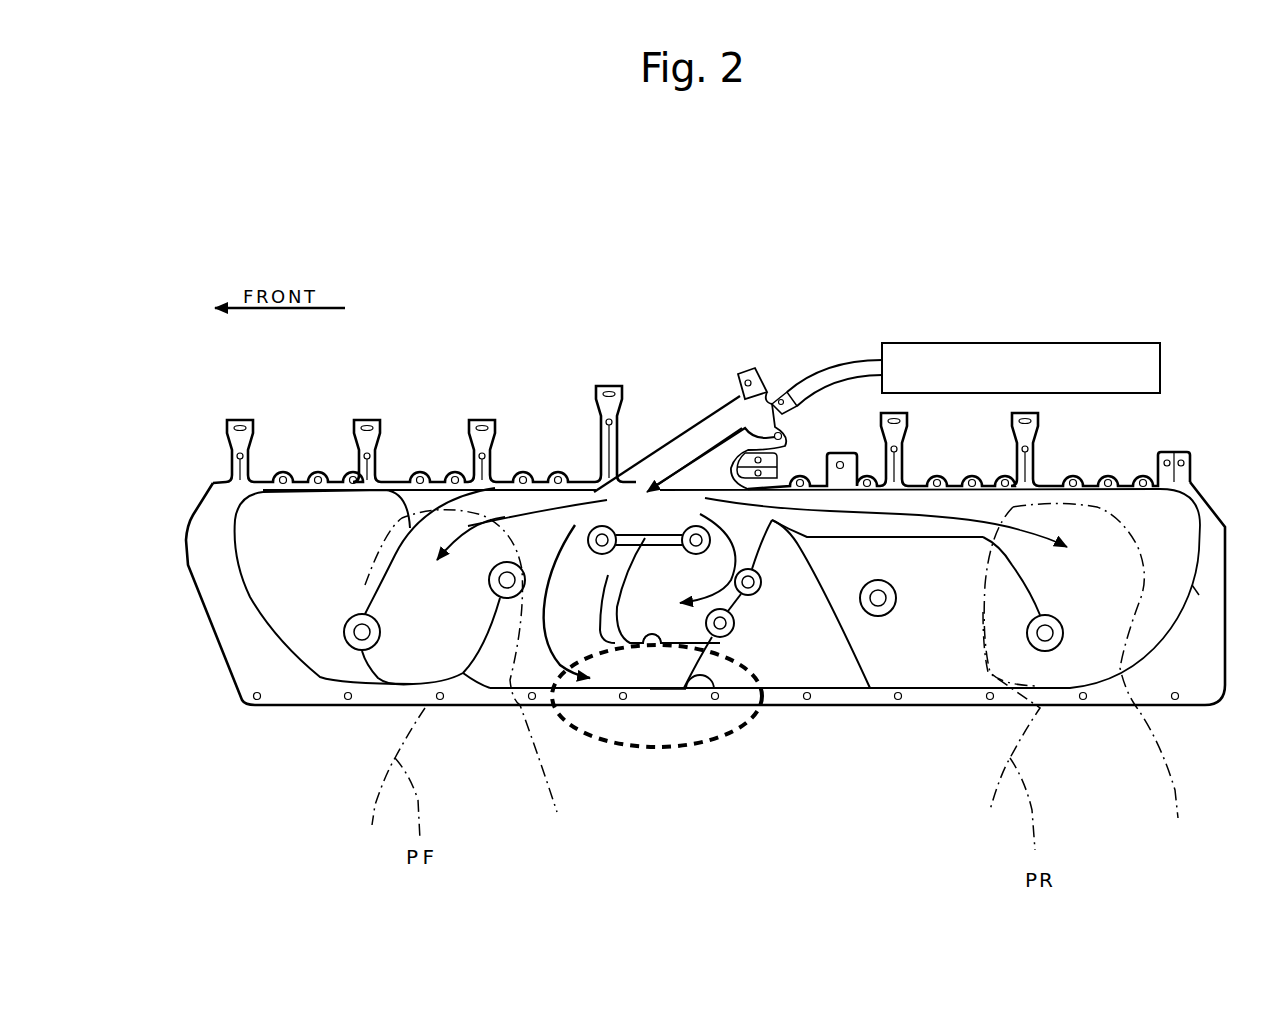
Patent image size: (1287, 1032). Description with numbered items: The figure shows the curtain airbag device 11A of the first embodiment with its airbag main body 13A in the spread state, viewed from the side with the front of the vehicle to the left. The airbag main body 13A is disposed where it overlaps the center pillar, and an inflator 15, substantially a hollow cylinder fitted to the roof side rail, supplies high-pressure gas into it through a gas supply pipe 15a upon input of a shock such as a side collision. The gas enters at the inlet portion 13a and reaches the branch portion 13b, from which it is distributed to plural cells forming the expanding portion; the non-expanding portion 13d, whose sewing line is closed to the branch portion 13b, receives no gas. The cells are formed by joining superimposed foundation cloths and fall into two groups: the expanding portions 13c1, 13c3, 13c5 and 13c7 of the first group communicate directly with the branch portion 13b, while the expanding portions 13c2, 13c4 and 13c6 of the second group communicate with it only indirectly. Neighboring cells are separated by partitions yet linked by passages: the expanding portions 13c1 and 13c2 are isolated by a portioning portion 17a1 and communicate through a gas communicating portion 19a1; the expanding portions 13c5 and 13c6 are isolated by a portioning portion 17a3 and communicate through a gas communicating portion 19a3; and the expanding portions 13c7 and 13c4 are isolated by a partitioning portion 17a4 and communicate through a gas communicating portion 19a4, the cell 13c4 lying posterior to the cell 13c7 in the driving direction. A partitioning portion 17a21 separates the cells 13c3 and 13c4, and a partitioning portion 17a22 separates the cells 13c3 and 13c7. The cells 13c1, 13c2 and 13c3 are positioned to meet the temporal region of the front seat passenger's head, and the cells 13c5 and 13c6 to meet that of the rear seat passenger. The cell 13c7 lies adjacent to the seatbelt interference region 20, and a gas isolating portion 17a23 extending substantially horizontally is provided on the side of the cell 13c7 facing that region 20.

The curtain airbag device 11A is at (712, 218).
The airbag main body 13A is at (523, 390).
The inlet portion 13a is at (703, 418).
The branch portion 13b is at (660, 528).
The expanding portion of the first group 13c1 is at (453, 599).
The expanding portion of the second group 13c2 is at (318, 576).
The expanding portion of the first group 13c3 is at (520, 623).
The expanding portion of the second group 13c4 is at (830, 632).
The expanding portion of the first group 13c5 is at (1106, 580).
The expanding portion of the second group 13c6 is at (945, 652).
The expanding portion of the first group 13c7 is at (695, 589).
The non-expanding portion 13d is at (1185, 628).
The inflator 15 is at (1005, 360).
The gas supply pipe 15a is at (828, 372).
The portioning portion 17a1 is at (375, 580).
The partitioning portion 17a21 is at (706, 674).
The partitioning portion 17a22 is at (594, 608).
The gas isolating portion 17a23 is at (668, 646).
The portioning portion 17a3 is at (1030, 580).
The partitioning portion 17a4 is at (877, 617).
The gas communicating portion 19a1 is at (357, 662).
The gas communicating portion 19a3 is at (1040, 668).
The gas communicating portion 19a4 is at (745, 603).
The seatbelt interference region 20 is at (718, 740).